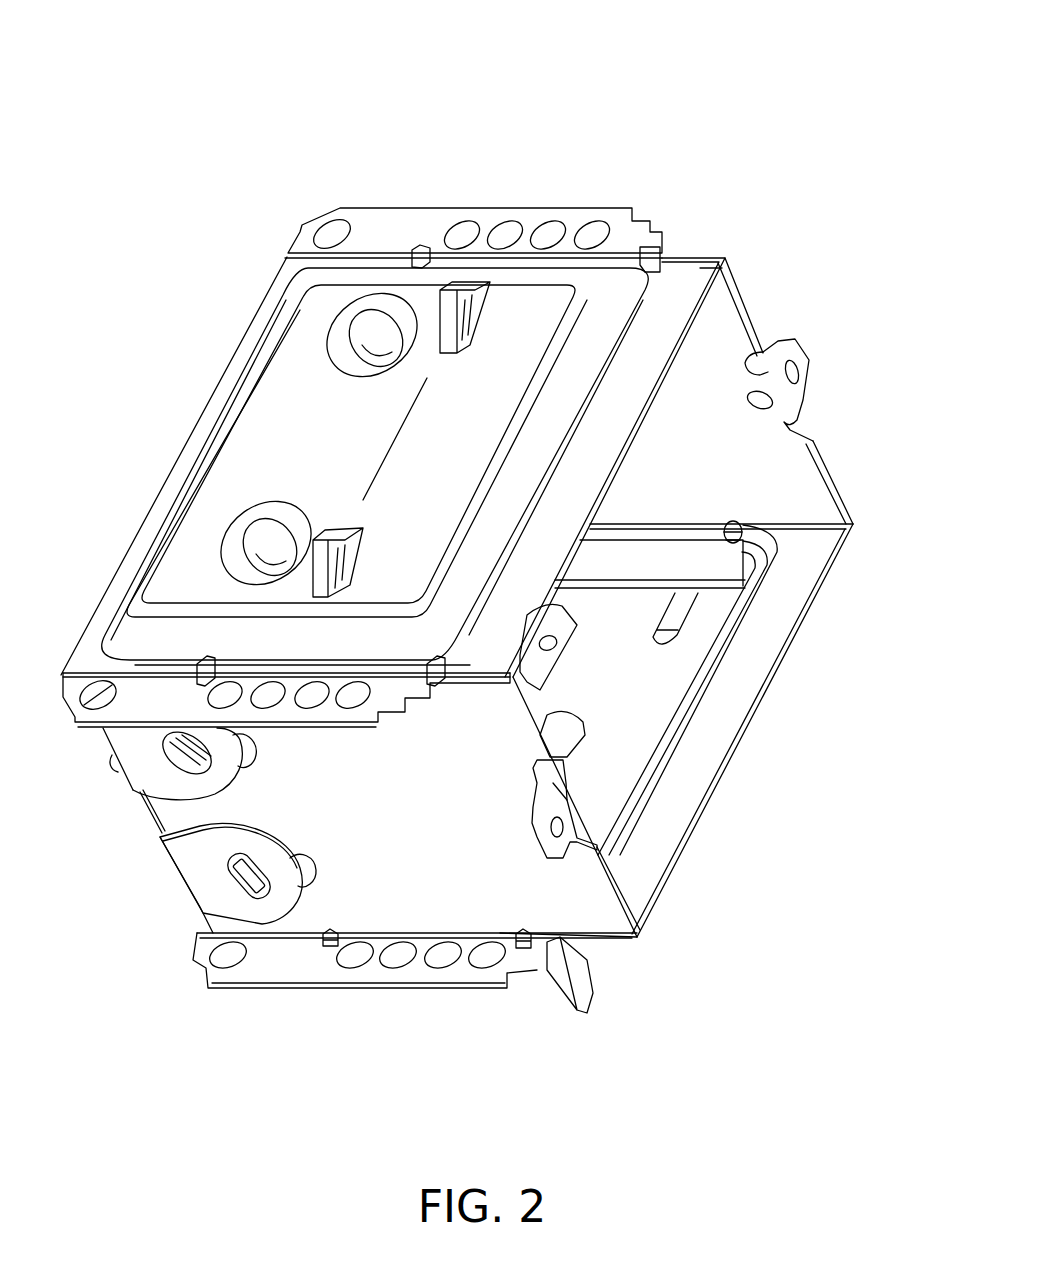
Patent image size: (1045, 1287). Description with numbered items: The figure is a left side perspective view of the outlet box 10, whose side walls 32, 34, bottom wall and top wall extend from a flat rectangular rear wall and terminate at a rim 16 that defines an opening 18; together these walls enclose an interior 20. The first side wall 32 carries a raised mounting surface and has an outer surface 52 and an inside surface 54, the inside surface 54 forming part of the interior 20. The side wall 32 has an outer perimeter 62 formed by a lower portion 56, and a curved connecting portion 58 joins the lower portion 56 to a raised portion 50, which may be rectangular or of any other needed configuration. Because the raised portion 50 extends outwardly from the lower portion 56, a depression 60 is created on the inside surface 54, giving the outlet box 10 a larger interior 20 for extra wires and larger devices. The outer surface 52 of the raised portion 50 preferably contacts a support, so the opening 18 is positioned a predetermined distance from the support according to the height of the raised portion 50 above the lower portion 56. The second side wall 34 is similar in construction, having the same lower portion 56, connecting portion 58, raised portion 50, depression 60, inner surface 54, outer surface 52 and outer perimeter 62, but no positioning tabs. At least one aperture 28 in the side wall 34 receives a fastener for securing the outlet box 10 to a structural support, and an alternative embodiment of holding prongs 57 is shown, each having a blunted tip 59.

The outlet box 10 is at (283, 135).
The rim 16 is at (805, 617).
The opening 18 is at (782, 470).
The interior 20 is at (725, 437).
The apertures 28 is at (388, 337).
The side wall 32 is at (665, 790).
The second side wall 34 is at (693, 265).
The raised portion 50 is at (537, 307).
The outer surface 52 is at (283, 452).
The inside surface 54 is at (648, 862).
The lower portion 56 is at (697, 278).
The holding prongs 57 is at (483, 290).
The curved connecting portion 58 is at (598, 330).
The blunted tip 59 is at (450, 293).
The depression 60 is at (610, 690).
The outer perimeter 62 is at (707, 300).